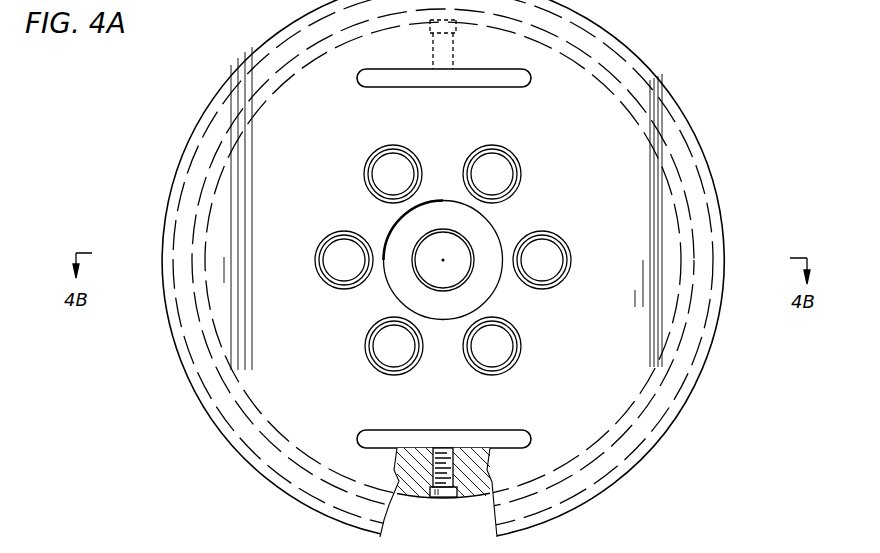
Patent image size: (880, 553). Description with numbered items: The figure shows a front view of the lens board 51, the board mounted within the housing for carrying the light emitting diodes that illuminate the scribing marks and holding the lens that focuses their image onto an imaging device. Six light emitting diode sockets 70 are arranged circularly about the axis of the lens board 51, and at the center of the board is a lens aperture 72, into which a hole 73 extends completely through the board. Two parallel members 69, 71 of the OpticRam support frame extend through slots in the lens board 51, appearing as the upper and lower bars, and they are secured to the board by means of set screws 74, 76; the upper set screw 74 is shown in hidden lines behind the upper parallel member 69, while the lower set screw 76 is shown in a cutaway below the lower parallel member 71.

The lens board 51 is at (662, 207).
The parallel member 69 is at (376, 78).
The light emitting diode sockets 70 is at (539, 250).
The parallel member 71 is at (510, 440).
The lens aperture 72 is at (398, 280).
The hole 73 is at (463, 265).
The set screw 74 is at (447, 50).
The set screw 76 is at (445, 482).